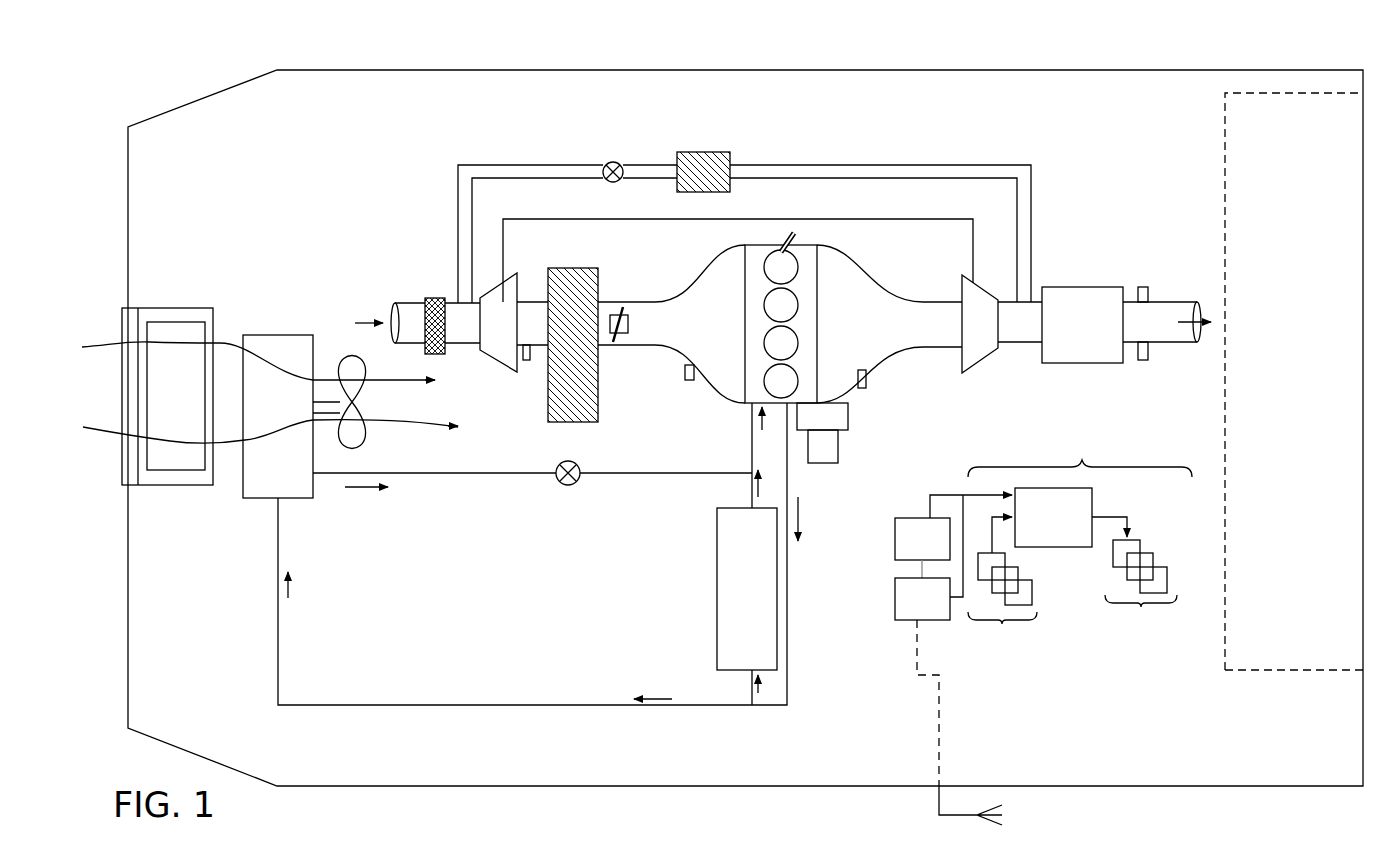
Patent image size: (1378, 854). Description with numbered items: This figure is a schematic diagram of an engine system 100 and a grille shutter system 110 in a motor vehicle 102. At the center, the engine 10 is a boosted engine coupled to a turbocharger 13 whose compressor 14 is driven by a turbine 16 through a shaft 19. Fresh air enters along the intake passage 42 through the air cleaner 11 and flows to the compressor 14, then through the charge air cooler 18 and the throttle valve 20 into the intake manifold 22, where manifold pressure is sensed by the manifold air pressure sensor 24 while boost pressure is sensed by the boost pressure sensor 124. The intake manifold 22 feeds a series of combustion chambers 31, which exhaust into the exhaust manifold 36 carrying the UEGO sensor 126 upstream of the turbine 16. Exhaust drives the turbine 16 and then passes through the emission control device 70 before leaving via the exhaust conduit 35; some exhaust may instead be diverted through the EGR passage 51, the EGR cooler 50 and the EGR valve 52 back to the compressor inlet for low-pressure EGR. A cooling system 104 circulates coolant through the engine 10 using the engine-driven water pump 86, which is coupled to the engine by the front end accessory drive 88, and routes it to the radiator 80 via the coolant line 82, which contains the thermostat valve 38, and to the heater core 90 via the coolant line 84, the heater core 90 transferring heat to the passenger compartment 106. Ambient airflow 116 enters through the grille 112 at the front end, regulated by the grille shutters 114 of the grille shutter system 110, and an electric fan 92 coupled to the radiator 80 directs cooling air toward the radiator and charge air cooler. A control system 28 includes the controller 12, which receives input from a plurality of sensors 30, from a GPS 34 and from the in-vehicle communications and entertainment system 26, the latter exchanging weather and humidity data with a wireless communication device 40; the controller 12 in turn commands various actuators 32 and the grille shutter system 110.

The engine 10 is at (817, 310).
The air cleaner 11 is at (436, 298).
The controller 12 is at (1043, 528).
The turbocharger 13 is at (552, 248).
The compressor 14 is at (489, 333).
The turbine 16 is at (971, 333).
The charge air cooler 18 is at (575, 268).
The shaft 19 is at (897, 219).
The throttle valve 20 is at (628, 325).
The intake manifold 22 is at (698, 333).
The manifold air pressure sensor 24 is at (686, 367).
The in-vehicle communications and entertainment system 26 is at (912, 608).
The control system 28 is at (1080, 448).
The sensors 30 is at (1007, 593).
The combustion chambers 31 is at (797, 262).
The actuators 32 is at (1143, 584).
The GPS 34 is at (912, 548).
The exhaust conduit 35 is at (1185, 303).
The exhaust manifold 36 is at (858, 335).
The thermostat valve 38 is at (567, 485).
The wireless communication device 40 is at (1005, 826).
The intake passage 42 is at (418, 352).
The EGR cooler 50 is at (710, 152).
The EGR passage 51 is at (813, 165).
The EGR valve 52 is at (620, 162).
The emission control device 70 is at (1073, 287).
The radiator 80 is at (291, 416).
The coolant line 82 is at (672, 472).
The coolant line 84 is at (752, 503).
The engine-driven water pump 86 is at (840, 452).
The front end accessory drive 88 is at (850, 412).
The heater core 90 is at (747, 589).
The electric fan 92 is at (363, 450).
The engine system 100 is at (1112, 123).
The motor vehicle 102 is at (717, 70).
The cooling system 104 is at (827, 625).
The passenger compartment 106 is at (1294, 381).
The grille shutter system 110 is at (168, 484).
The grille 112 is at (122, 473).
The grille shutters 114 is at (164, 405).
The ambient airflow 116 is at (92, 347).
The boost pressure sensor 124 is at (531, 360).
The UEGO sensor 126 is at (866, 377).